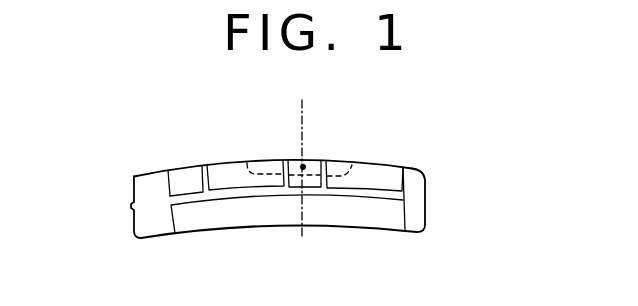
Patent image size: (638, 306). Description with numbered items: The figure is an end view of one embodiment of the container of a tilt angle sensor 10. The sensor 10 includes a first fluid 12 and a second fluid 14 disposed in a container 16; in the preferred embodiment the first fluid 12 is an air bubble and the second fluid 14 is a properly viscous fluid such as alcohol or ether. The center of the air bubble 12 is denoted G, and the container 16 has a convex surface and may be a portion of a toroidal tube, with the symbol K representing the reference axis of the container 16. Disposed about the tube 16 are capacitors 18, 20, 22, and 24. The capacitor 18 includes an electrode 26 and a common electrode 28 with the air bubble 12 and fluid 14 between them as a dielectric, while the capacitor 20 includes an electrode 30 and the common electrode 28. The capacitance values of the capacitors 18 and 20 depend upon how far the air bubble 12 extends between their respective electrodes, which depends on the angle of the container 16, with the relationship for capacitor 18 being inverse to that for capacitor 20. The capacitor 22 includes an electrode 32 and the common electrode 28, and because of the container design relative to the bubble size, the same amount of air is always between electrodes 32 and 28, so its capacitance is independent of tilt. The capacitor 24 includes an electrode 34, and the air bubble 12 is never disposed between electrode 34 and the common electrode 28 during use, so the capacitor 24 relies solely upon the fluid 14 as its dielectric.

The tilt angle sensor 10 is at (126, 192).
The first fluid 12 is at (352, 165).
The second fluid 14 is at (421, 182).
The container 16 is at (424, 207).
The capacitor 18 is at (379, 159).
The capacitor 20 is at (246, 157).
The capacitor 22 is at (297, 150).
The capacitor 24 is at (168, 171).
The electrode 26 is at (392, 176).
The common electrode 28 is at (368, 213).
The electrode 30 is at (227, 170).
The electrode 32 is at (292, 168).
The electrode 34 is at (181, 182).
The reference axis K is at (308, 118).
The center of air bubble G is at (305, 167).